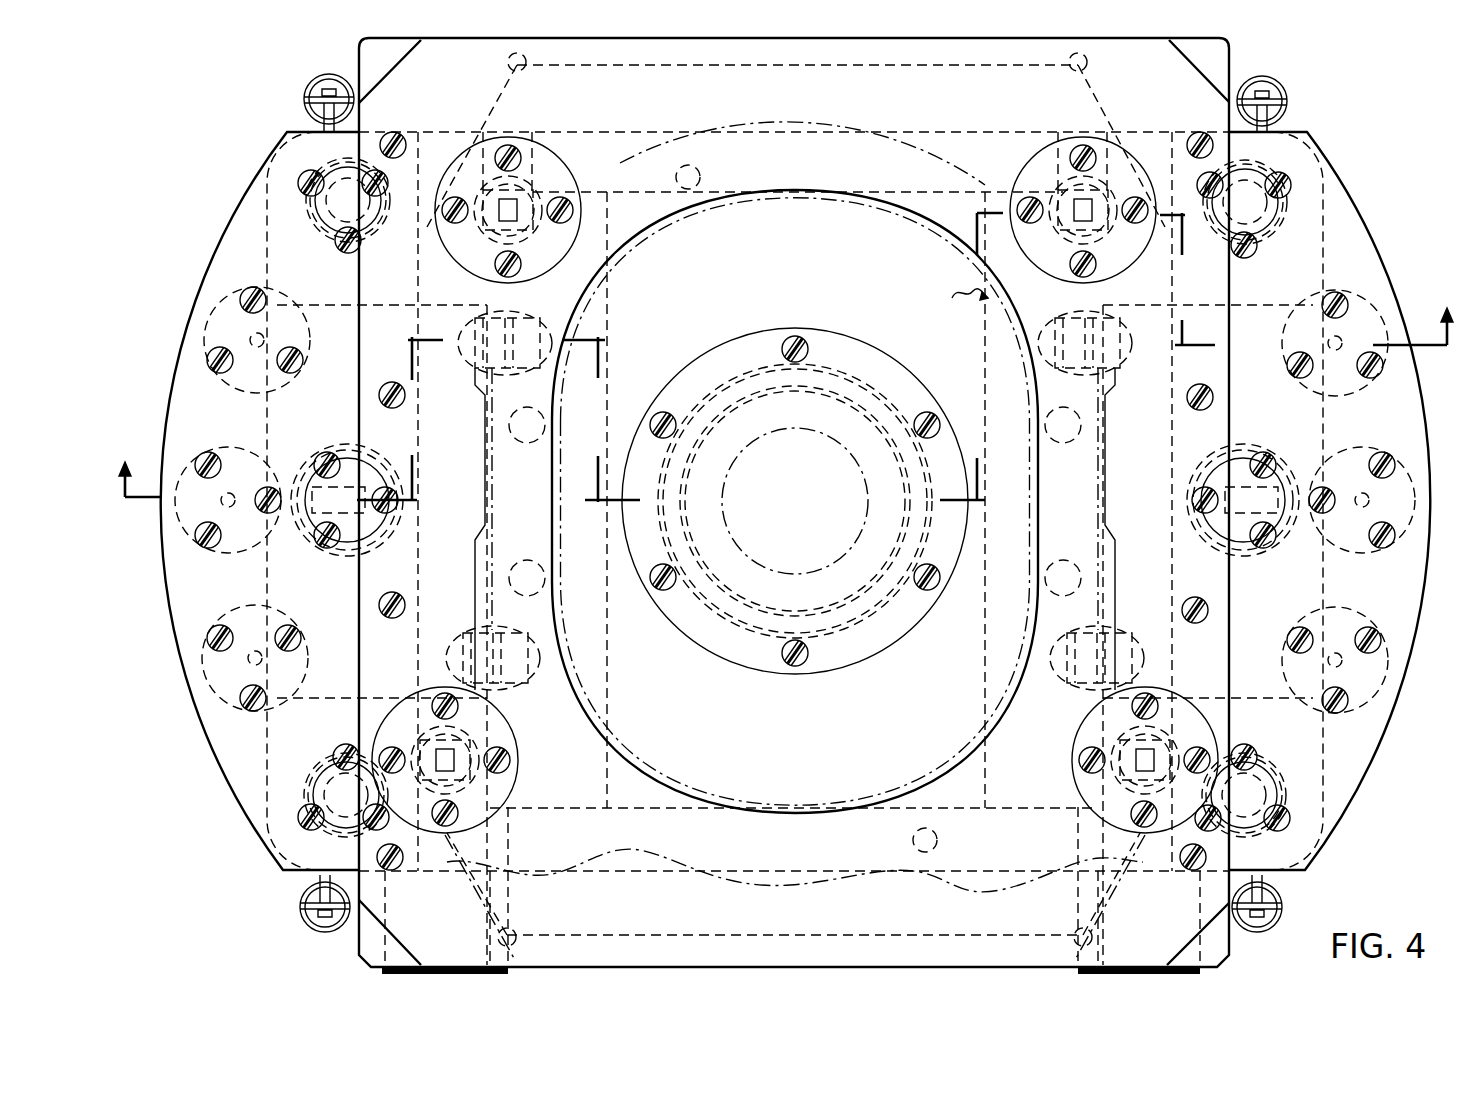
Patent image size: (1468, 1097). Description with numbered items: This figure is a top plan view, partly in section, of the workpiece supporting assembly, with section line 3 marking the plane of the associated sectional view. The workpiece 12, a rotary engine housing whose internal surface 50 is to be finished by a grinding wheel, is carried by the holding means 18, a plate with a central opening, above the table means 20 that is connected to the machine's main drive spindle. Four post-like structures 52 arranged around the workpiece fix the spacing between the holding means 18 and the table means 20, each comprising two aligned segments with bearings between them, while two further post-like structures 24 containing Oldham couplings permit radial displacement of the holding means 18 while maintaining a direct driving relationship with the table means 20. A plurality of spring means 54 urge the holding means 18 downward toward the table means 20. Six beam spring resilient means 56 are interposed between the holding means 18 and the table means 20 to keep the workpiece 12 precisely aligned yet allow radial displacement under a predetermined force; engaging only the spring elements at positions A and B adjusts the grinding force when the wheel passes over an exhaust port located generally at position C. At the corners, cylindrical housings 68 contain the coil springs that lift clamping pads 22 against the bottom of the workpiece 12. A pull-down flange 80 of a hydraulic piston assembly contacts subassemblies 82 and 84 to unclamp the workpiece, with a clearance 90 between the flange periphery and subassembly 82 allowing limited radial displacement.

The workpiece 12 is at (853, 125).
The holding means 18 is at (1352, 215).
The table means 20 is at (1345, 778).
The clamping pad 22 is at (600, 242).
The post-like structures 24 is at (334, 445).
The internal surface 50 is at (1032, 505).
The post-like structures 52 is at (300, 156).
The spring means 54 is at (318, 80).
The resilient means 56 is at (256, 348).
The cylindrical housing 68 is at (795, 485).
The pull-down flange 80 is at (690, 590).
The subassembly 82 is at (863, 304).
The subassembly 84 is at (515, 565).
The clearance 90 is at (720, 612).
The position A is at (225, 658).
The position B is at (1355, 372).
The position C is at (952, 319).
The section line 3 is at (786, 357).